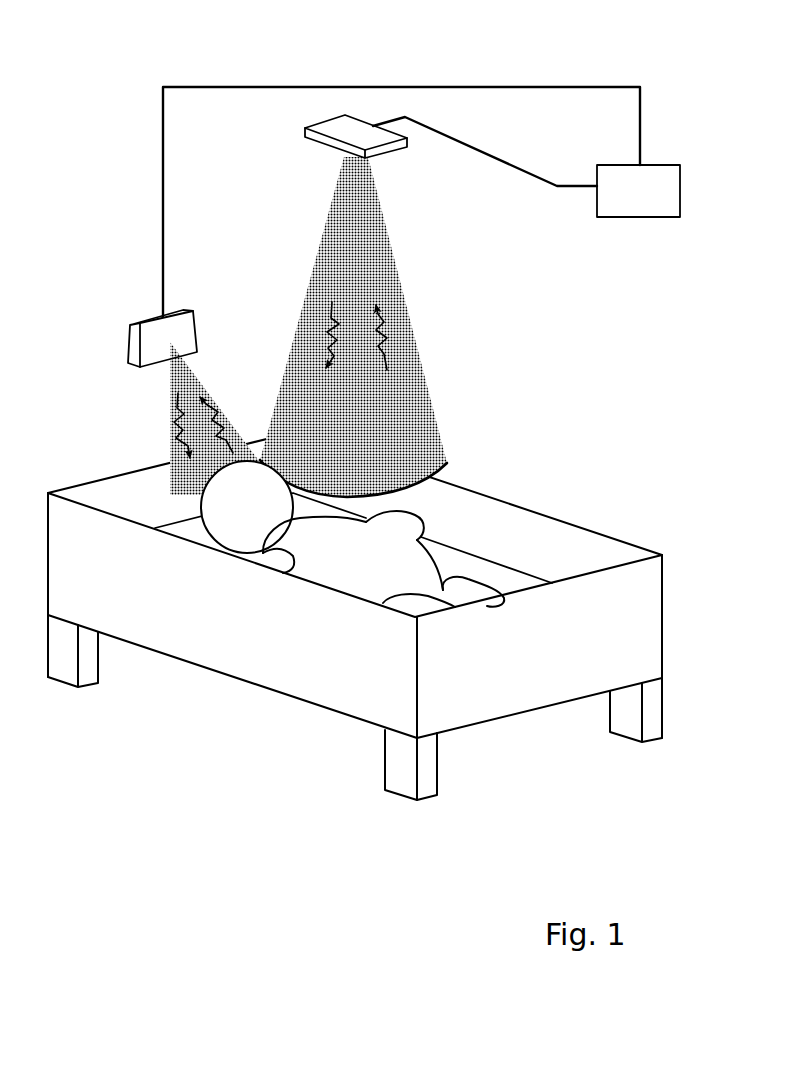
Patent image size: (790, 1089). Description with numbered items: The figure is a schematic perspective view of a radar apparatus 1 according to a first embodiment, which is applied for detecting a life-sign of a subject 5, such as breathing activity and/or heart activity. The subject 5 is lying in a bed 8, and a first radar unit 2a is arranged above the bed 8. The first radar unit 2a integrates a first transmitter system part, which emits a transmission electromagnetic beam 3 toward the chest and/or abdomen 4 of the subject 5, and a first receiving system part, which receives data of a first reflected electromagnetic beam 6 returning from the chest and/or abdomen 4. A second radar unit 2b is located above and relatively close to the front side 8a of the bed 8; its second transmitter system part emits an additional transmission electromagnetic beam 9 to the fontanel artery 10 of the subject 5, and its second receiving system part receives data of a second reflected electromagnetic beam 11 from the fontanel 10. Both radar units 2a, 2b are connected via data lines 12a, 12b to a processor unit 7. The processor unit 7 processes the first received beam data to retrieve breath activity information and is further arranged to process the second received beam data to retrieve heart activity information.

The radar apparatus 1 is at (687, 359).
The first radar unit 2a is at (303, 130).
The second radar unit 2b is at (130, 342).
The transmission electromagnetic beam 3 is at (330, 310).
The chest and/or abdomen 4 is at (345, 565).
The subject 5 is at (414, 533).
The first reflected electromagnetic beam 6 is at (387, 362).
The processor unit 7 is at (660, 197).
The bed 8 is at (548, 678).
The front side of the bed 8a is at (140, 503).
The additional transmission electromagnetic beam 9 is at (175, 402).
The fontanel artery 10 is at (222, 483).
The second reflected electromagnetic beam 11 is at (208, 410).
The data line 12a is at (487, 158).
The data line 12b is at (507, 87).